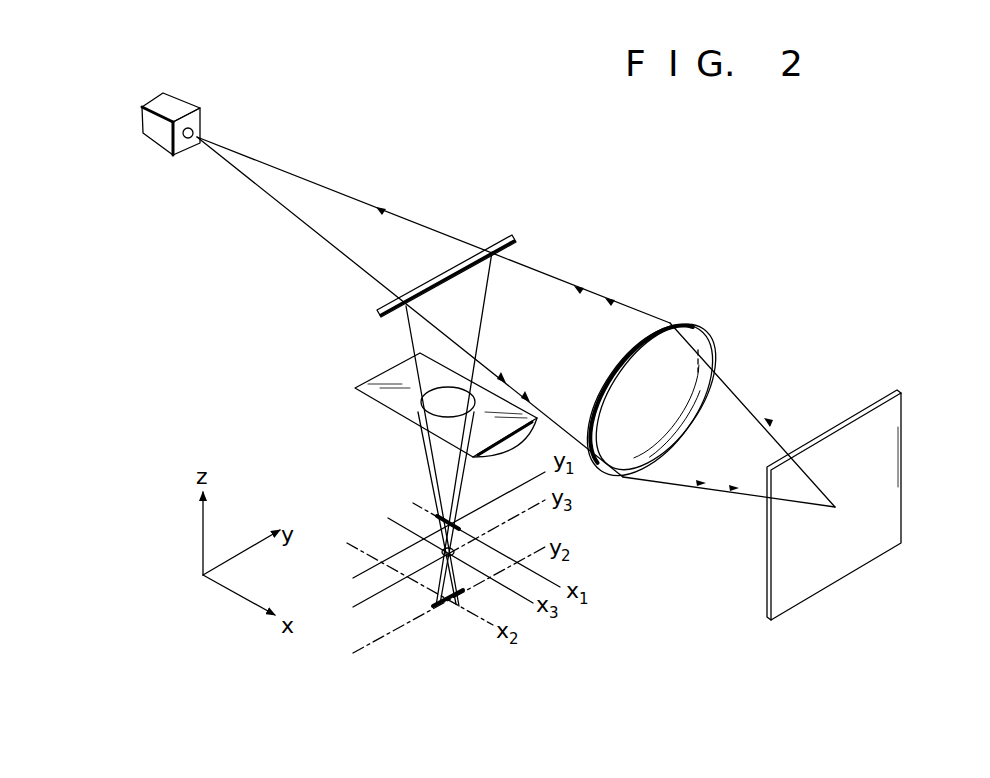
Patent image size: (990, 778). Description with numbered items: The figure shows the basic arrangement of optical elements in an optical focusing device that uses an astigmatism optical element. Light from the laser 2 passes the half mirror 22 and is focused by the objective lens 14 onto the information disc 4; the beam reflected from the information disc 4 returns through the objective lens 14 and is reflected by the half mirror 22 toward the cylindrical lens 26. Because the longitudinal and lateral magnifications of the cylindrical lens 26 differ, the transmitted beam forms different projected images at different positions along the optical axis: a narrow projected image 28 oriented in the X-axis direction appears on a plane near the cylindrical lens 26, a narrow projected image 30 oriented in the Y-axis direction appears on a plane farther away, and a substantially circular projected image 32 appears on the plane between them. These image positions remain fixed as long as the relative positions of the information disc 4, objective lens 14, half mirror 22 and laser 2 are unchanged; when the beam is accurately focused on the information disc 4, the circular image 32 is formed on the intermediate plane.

The laser 2 is at (176, 106).
The half mirror 22 is at (503, 236).
The cylindrical lens 26 is at (390, 400).
The objective lens 14 is at (698, 328).
The information disc 4 is at (890, 510).
The narrow projected image oriented in the X-axis direction 28 is at (455, 518).
The substantially circular projected image 32 is at (443, 553).
The narrow projected image oriented in the Y-axis direction 30 is at (447, 608).